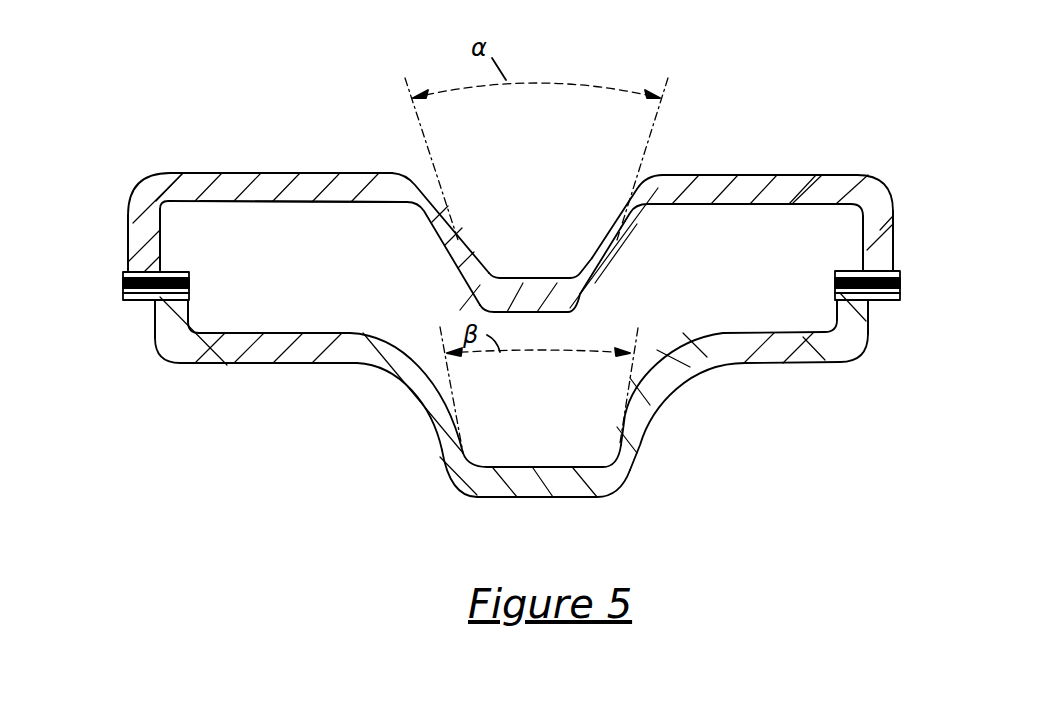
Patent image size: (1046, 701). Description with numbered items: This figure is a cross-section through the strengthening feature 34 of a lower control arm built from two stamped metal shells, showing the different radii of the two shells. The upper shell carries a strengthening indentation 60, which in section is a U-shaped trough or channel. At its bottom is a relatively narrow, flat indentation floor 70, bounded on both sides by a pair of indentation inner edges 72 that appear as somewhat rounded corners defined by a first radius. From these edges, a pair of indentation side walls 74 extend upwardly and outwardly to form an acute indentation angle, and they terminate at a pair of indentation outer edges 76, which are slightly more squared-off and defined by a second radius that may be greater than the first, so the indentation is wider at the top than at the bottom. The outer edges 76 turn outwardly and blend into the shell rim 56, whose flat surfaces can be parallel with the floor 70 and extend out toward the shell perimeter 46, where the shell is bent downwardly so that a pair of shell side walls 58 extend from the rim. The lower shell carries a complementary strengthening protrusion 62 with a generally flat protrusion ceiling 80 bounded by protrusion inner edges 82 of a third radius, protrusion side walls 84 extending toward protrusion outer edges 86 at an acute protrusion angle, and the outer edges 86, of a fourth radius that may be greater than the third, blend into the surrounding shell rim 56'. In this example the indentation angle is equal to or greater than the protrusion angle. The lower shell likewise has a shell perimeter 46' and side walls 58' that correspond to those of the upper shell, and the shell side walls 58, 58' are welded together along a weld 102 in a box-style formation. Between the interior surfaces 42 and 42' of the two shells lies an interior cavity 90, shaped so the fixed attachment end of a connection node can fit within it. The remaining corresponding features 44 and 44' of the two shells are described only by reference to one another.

The strengthening feature 34 is at (713, 63).
The interior surface 42 is at (300, 229).
The interior surface 42' is at (272, 304).
The exterior surface 44 is at (267, 183).
The exterior surface 44' is at (246, 362).
The shell perimeter 46 is at (514, 201).
The shell perimeter 46' is at (504, 352).
The shell rim 56 is at (486, 158).
The shell rim 56' is at (504, 379).
The shell side walls 58 is at (511, 233).
The shell side walls 58' is at (508, 338).
The strengthening indentation 60 is at (593, 284).
The strengthening protrusion 62 is at (515, 475).
The indentation floor 70 is at (535, 297).
The indentation inner edges 72 is at (580, 278).
The indentation side walls 74 is at (452, 242).
The indentation outer edges 76 is at (418, 182).
The protrusion ceiling 80 is at (555, 485).
The protrusion inner edges 82 is at (448, 482).
The protrusion side walls 84 is at (435, 445).
The protrusion outer edges 86 is at (417, 397).
The interior cavity 90 is at (767, 268).
The weld 102 is at (125, 278).